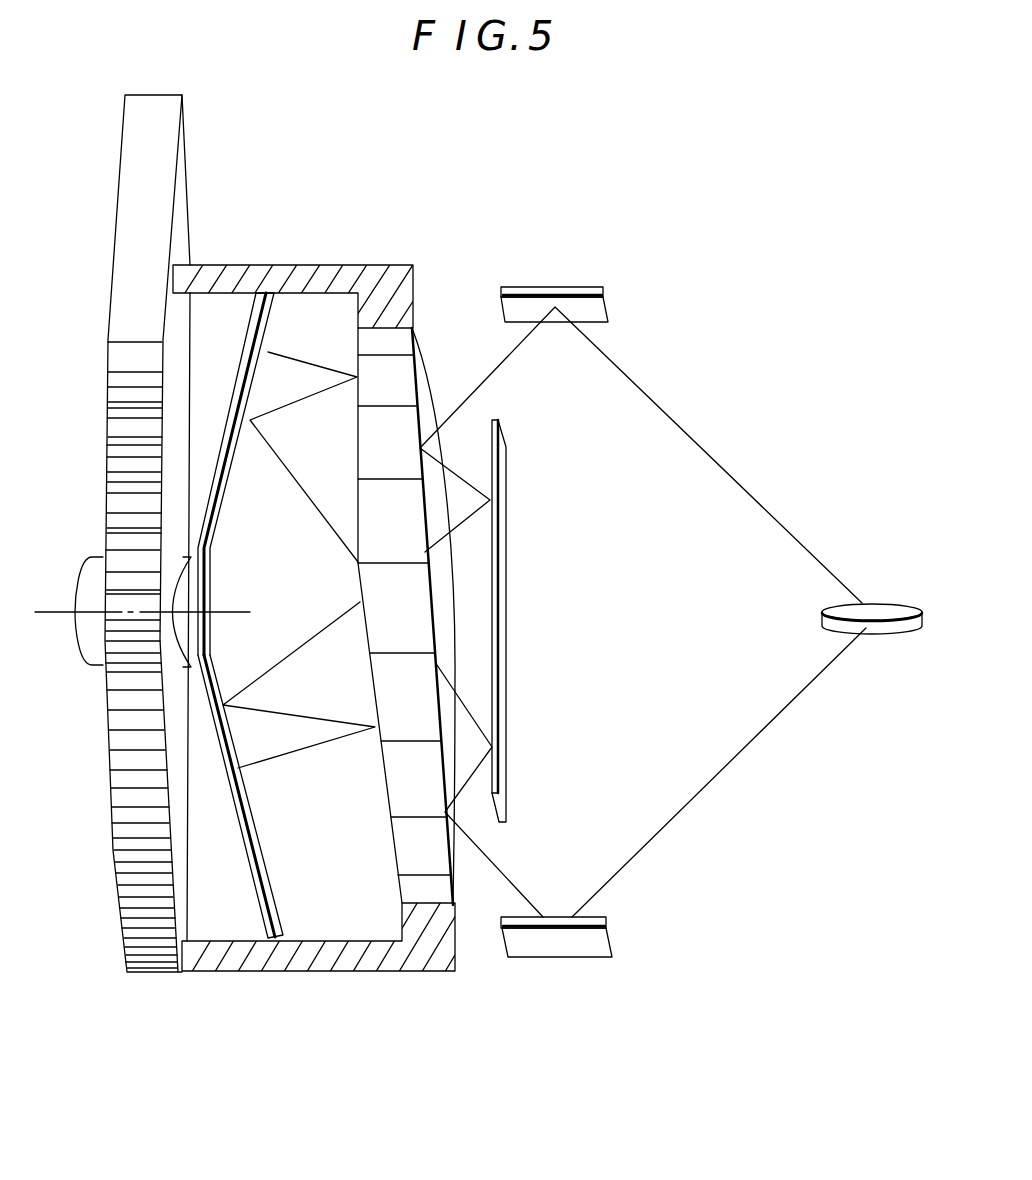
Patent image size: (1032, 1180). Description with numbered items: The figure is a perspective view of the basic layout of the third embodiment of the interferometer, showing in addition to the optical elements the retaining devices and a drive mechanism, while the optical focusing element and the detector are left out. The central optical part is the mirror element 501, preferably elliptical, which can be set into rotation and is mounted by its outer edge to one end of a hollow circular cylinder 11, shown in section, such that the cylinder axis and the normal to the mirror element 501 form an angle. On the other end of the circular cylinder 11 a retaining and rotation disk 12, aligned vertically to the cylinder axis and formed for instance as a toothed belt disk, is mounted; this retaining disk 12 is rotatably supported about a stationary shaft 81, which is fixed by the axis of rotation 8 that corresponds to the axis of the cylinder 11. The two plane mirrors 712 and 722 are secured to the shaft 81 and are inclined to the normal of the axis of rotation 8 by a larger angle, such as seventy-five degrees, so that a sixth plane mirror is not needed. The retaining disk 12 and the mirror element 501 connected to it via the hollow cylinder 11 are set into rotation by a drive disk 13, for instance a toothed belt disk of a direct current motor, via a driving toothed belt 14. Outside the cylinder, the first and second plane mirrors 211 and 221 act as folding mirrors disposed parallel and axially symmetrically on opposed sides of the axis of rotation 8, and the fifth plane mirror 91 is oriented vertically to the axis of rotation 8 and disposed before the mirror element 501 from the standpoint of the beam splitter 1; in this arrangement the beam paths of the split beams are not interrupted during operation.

The beam splitter 1 is at (885, 602).
The axis of rotation 8 is at (230, 598).
The stationary shaft 81 is at (73, 573).
The hollow circular cylinder 11 is at (253, 265).
The retaining and rotation disk 12 is at (183, 907).
The drive disk 13 is at (183, 128).
The driving toothed belt 14 is at (127, 272).
The first plane mirror 211 is at (600, 312).
The second plane mirror 221 is at (606, 938).
The mirror element 501 is at (418, 372).
The plane mirror 712 is at (276, 328).
The plane mirror 722 is at (260, 858).
The fifth plane mirror 91 is at (505, 613).